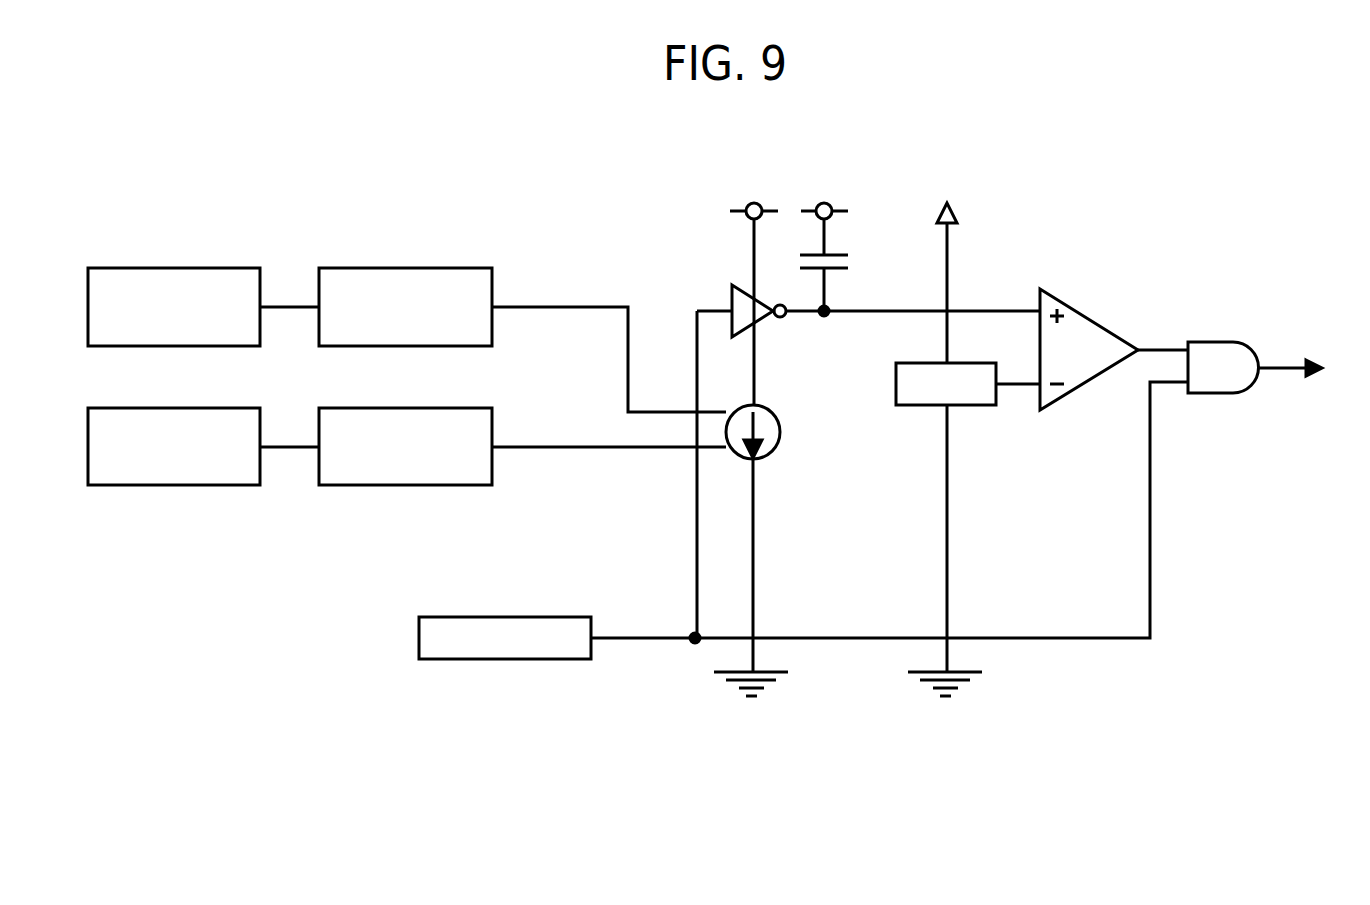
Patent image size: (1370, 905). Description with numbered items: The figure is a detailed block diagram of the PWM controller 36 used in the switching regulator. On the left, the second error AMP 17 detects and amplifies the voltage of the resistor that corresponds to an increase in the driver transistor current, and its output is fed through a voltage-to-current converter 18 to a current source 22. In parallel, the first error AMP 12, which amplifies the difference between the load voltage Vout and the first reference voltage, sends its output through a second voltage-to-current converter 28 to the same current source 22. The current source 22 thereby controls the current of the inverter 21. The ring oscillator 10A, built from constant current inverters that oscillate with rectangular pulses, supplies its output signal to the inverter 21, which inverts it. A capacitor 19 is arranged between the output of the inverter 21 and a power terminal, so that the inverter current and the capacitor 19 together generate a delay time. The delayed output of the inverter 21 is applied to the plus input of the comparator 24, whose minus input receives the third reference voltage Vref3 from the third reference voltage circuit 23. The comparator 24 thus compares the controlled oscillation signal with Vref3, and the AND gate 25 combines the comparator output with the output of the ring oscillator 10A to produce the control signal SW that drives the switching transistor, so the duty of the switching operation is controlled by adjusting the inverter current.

The PWM controller 36 is at (1116, 171).
The second error AMP 17 is at (233, 268).
The voltage-to-current converter 18 is at (464, 268).
The first error AMP 12 is at (233, 408).
The voltage-to-current converter 28 is at (464, 408).
The ring oscillator 10A is at (568, 604).
The inverter 21 is at (762, 322).
The current source 22 is at (772, 455).
The capacitor 19 is at (852, 266).
The third reference voltage circuit 23 is at (908, 408).
The comparator 24 is at (1088, 385).
The AND gate 25 is at (1213, 342).